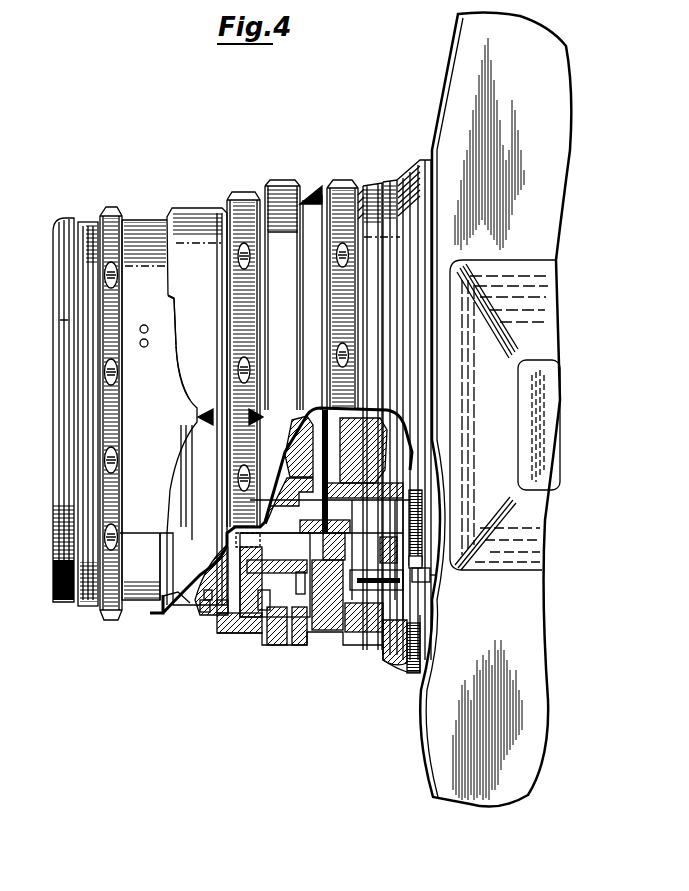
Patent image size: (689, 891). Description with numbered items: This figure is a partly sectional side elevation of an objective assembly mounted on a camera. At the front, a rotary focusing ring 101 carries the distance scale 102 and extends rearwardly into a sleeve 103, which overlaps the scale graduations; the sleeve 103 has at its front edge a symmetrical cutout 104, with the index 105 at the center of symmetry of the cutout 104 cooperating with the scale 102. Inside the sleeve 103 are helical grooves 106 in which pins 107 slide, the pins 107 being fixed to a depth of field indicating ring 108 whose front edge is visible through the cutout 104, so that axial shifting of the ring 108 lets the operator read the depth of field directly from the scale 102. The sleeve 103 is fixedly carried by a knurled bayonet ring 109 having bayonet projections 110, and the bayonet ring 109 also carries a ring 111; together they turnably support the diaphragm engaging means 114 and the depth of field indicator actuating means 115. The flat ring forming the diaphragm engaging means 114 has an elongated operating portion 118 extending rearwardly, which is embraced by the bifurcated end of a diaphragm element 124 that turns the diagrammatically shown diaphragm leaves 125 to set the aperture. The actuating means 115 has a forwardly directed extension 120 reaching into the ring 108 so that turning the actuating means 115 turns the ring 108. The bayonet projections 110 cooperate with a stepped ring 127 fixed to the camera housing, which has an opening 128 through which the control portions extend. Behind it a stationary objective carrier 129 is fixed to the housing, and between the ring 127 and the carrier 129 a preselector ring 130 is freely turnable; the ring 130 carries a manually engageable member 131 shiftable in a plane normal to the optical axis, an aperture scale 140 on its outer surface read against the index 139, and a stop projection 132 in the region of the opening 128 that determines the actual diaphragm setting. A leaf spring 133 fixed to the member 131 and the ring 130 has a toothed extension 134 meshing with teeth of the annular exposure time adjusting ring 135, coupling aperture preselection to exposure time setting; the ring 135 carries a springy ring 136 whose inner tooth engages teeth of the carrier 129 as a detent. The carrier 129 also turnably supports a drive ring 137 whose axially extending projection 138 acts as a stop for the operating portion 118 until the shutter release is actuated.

The rotary focusing ring 101 is at (106, 207).
The distance scale 102 is at (122, 602).
The sleeve 103 is at (178, 209).
The symmetrical cutout 104 is at (176, 348).
The index 105 is at (177, 349).
The helical grooves 106 is at (208, 604).
The pins 107 is at (190, 607).
The depth of field indicating ring 108 is at (176, 601).
The bayonet ring 109 is at (222, 606).
The bayonet projections 110 is at (267, 620).
The ring 111 is at (205, 604).
The diaphragm engaging means 114 is at (236, 549).
The depth of field indicator actuating means 115 is at (95, 601).
The elongated operating portion 118 is at (245, 530).
The forwardly directed extension 120 is at (180, 607).
The diaphragm element 124 is at (330, 463).
The diaphragm leaves 125 is at (327, 430).
The ring 127 is at (287, 617).
The opening 128 is at (340, 487).
The objective carrier 129 is at (383, 648).
The preselector ring 130 is at (322, 623).
The manually engageable member 131 is at (273, 647).
The stop projection 132 is at (333, 523).
The leaf spring 133 is at (305, 648).
The extension 134 is at (352, 635).
The exposure time adjusting ring 135 is at (312, 643).
The springy ring 136 is at (421, 634).
The drive ring 137 is at (405, 578).
The axially extending projection 138 is at (412, 562).
The index 139 is at (240, 425).
The aperture scale 140 is at (272, 265).